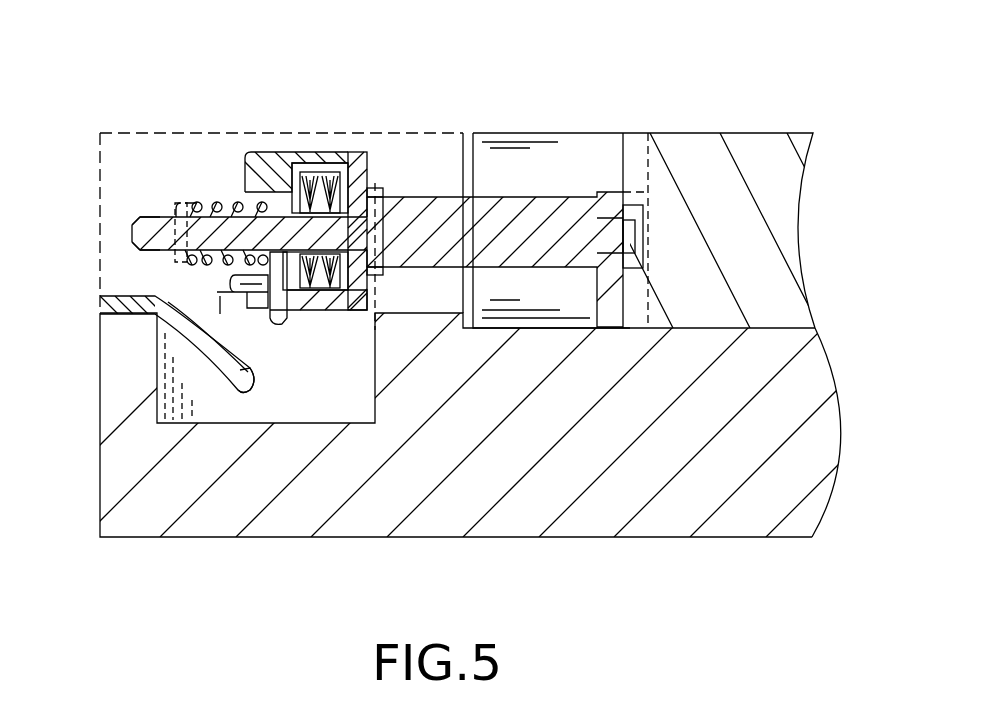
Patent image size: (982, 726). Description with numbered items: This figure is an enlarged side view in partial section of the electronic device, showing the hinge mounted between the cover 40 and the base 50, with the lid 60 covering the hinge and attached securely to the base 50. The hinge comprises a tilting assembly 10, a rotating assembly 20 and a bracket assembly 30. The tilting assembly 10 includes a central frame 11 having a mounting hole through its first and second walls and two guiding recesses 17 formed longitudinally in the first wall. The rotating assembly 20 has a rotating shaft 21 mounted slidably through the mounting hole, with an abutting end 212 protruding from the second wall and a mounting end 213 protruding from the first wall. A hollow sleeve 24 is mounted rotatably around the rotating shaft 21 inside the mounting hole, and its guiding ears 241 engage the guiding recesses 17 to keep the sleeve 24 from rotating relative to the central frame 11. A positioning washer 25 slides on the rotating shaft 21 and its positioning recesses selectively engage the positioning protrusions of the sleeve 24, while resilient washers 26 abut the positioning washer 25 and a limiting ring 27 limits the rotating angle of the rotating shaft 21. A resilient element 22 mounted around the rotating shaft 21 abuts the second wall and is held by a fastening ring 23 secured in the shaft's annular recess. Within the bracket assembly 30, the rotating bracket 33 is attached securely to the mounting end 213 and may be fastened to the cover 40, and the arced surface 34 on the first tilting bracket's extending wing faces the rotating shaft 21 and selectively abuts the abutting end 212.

The tilting assembly 10 is at (329, 187).
The central frame 11 is at (272, 163).
The guiding recesses 17 is at (370, 274).
The rotating assembly 20 is at (510, 185).
The rotating shaft 21 is at (537, 215).
The resilient element 22 is at (218, 203).
The fastening ring 23 is at (182, 203).
The sleeve 24 is at (360, 178).
The positioning washer 25 is at (343, 178).
The resilient washers 26 is at (330, 165).
The limiting ring 27 is at (293, 273).
The bracket assembly 30 is at (135, 286).
The rotating bracket 33 is at (612, 197).
The arced surface 34 is at (243, 353).
The cover 40 is at (770, 157).
The base 50 is at (665, 505).
The lid 60 is at (112, 175).
The abutting end 212 is at (158, 223).
The mounting end 213 is at (622, 233).
The guiding ears 241 is at (382, 171).